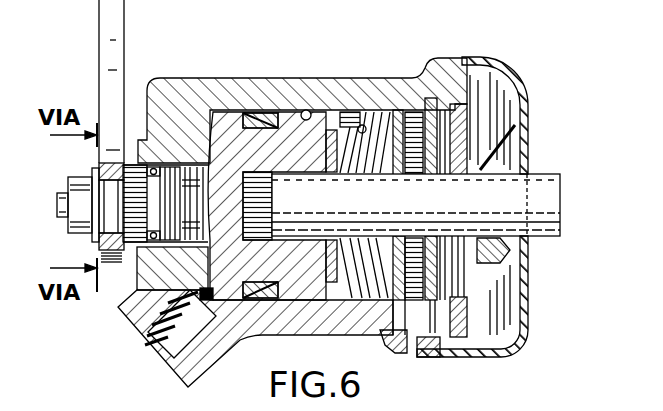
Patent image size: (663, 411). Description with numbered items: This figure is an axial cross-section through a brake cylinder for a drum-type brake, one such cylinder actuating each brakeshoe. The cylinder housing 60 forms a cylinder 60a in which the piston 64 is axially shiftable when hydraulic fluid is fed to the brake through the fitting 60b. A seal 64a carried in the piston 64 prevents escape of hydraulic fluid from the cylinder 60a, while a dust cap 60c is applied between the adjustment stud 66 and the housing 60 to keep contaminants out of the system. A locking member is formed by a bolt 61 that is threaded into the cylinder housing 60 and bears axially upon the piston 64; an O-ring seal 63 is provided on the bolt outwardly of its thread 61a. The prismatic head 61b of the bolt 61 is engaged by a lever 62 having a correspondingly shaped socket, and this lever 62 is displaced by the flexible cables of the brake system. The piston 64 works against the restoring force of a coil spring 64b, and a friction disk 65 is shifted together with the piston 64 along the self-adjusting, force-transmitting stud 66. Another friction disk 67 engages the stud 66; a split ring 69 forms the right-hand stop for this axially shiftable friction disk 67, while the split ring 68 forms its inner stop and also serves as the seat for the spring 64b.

The cylinder housing 60 is at (165, 97).
The cylinder 60a is at (301, 112).
The fitting 60b is at (177, 352).
The dust cap 60c is at (513, 73).
The bolt 61 is at (207, 195).
The thread 61a is at (168, 232).
The prismatic head 61b is at (78, 229).
The lever 62 is at (102, 15).
The O-ring seal 63 is at (138, 262).
The piston 64 is at (240, 275).
The seal 64a is at (272, 112).
The coil spring 64b is at (362, 128).
The friction disk 65 is at (326, 263).
The adjustment stud 66 is at (515, 203).
The friction disk 67 is at (390, 343).
The split ring 68 is at (383, 334).
The split ring 69 is at (423, 352).